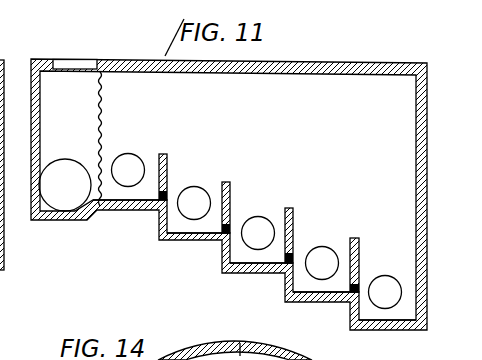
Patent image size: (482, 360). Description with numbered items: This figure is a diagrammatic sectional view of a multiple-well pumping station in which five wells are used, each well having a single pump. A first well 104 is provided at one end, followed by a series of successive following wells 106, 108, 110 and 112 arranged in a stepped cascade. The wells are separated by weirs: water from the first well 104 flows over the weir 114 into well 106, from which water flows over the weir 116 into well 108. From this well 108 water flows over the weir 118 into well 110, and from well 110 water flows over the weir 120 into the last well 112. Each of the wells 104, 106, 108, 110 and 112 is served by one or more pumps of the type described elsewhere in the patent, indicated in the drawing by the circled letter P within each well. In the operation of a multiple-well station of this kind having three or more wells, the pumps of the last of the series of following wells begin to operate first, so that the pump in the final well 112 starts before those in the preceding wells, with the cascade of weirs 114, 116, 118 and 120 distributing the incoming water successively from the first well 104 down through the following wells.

The first well 104 is at (138, 190).
The well 106 is at (208, 227).
The well 108 is at (263, 256).
The well 110 is at (330, 288).
The well 112 is at (373, 309).
The weir 114 is at (166, 153).
The weir 116 is at (226, 181).
The weir 118 is at (289, 207).
The weir 120 is at (355, 237).